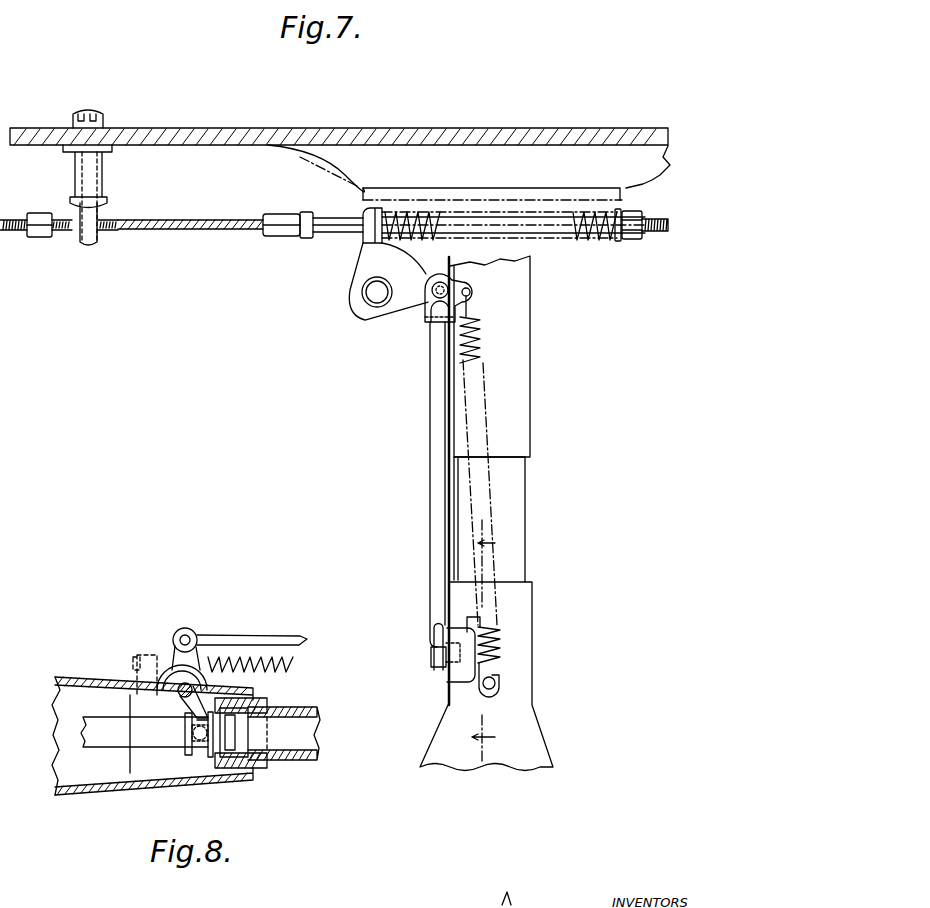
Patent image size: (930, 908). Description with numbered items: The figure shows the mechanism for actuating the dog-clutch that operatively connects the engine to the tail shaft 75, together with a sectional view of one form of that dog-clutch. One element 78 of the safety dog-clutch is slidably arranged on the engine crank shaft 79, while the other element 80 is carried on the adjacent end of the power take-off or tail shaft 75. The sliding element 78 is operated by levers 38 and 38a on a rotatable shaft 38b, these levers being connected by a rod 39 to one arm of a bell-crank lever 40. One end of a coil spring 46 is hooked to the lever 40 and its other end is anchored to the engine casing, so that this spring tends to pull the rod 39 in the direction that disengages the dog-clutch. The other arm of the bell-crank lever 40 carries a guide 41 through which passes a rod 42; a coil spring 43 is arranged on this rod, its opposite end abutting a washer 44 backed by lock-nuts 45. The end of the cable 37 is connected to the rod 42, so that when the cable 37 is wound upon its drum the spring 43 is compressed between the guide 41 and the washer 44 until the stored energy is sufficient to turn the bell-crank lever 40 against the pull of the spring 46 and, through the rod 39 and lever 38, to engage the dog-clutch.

In FIG. 7, the cable 37 is at (180, 229).
In FIG. 7, the rod 42 is at (317, 233).
In FIG. 7, the guide 41 is at (366, 232).
In FIG. 7, the coil spring 43 is at (603, 215).
In FIG. 7, the washer 44 is at (618, 230).
In FIG. 7, the lock-nuts 45 is at (625, 213).
In FIG. 7, the bell-crank lever 40 is at (405, 298).
In FIG. 7, the tail shaft 75 is at (525, 563).
In FIG. 8, the tail shaft 75 is at (310, 733).
In FIG. 7, the rod 39 is at (443, 522).
In FIG. 8, the rod 39 is at (267, 637).
In FIG. 7, the coil spring 46 is at (500, 652).
In FIG. 8, the coil spring 46 is at (291, 666).
In FIG. 7, the lever 38a is at (437, 668).
In FIG. 8, the lever 38a is at (175, 640).
In FIG. 8, the lever 38 is at (160, 683).
In FIG. 8, the rotatable shaft 38b is at (180, 693).
In FIG. 8, the dog-clutch element 78 is at (223, 752).
In FIG. 8, the engine crank shaft 79 is at (153, 745).
In FIG. 8, the dog-clutch element 80 is at (262, 766).